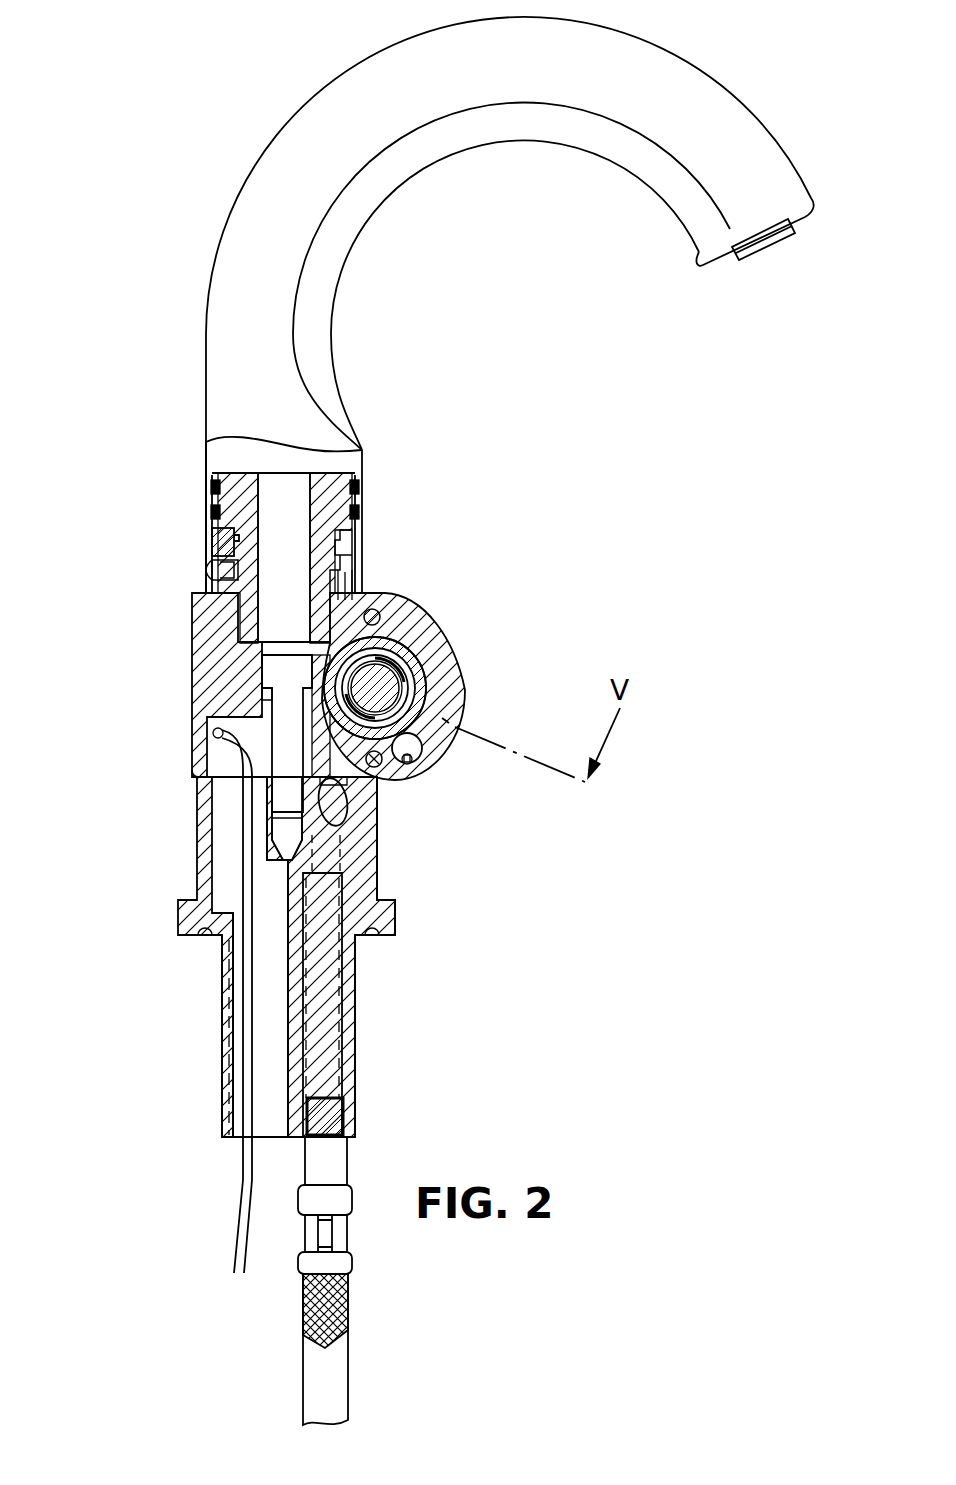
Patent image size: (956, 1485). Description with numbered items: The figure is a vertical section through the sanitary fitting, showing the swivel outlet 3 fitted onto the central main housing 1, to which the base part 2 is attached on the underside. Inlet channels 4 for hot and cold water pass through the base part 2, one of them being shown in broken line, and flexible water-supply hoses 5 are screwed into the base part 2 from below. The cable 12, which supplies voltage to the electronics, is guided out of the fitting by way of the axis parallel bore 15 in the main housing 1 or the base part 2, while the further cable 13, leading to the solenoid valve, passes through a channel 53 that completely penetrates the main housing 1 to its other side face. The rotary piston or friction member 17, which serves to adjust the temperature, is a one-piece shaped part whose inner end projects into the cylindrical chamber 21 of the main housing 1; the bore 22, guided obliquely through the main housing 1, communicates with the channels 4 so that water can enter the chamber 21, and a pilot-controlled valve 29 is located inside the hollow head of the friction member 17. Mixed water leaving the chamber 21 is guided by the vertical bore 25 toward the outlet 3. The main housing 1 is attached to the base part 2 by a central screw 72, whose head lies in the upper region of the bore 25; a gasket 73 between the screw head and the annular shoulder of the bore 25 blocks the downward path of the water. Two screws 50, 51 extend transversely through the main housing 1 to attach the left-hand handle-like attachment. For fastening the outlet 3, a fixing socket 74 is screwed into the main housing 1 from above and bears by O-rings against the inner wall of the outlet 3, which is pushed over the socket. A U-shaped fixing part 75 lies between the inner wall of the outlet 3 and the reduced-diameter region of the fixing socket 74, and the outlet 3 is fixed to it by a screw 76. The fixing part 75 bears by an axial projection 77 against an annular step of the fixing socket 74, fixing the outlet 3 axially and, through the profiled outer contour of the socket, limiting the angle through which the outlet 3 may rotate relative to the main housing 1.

The main housing 1 is at (217, 641).
The base part 2 is at (363, 887).
The swivel outlet 3 is at (263, 313).
The inlet channels 4 is at (347, 1013).
The flexible water-supply hoses 5 is at (338, 1358).
The cable 12 is at (250, 1156).
The further cable 13 is at (417, 760).
The axis parallel bore 15 is at (219, 848).
The rotary piston (friction member) 17 is at (404, 658).
The cylindrical chamber 21 is at (419, 668).
The bore 22 is at (350, 805).
The vertical bore 25 is at (262, 658).
The pilot-controlled valve 29 is at (362, 692).
The screw 50 is at (382, 765).
The screw 51 is at (378, 612).
The channel 53 is at (444, 713).
The central screw 72 is at (283, 745).
The gasket 73 is at (264, 696).
The fixing socket 74 is at (357, 487).
The U-shaped fixing part 75 is at (352, 553).
The screw 76 is at (207, 563).
The axial projection 77 is at (211, 543).